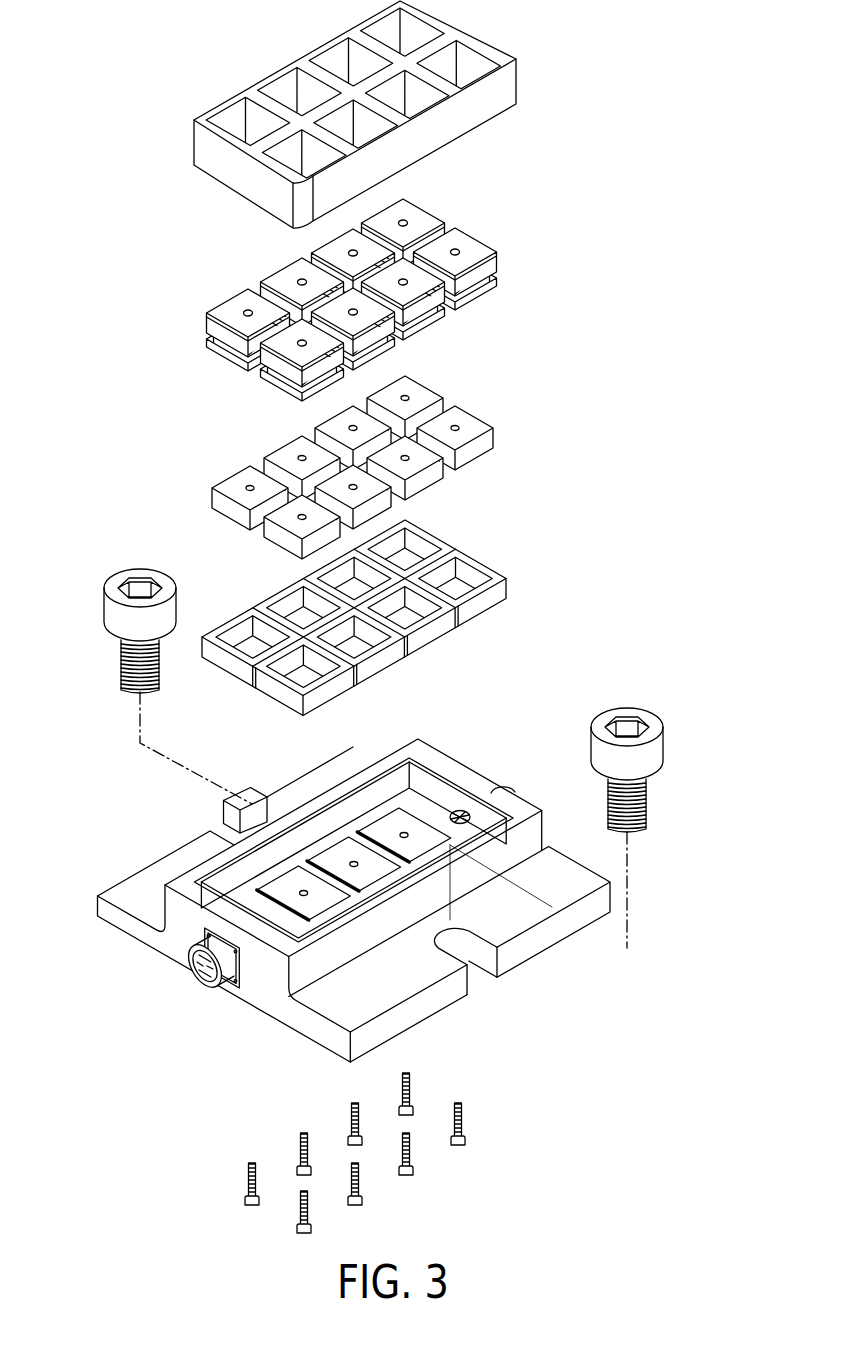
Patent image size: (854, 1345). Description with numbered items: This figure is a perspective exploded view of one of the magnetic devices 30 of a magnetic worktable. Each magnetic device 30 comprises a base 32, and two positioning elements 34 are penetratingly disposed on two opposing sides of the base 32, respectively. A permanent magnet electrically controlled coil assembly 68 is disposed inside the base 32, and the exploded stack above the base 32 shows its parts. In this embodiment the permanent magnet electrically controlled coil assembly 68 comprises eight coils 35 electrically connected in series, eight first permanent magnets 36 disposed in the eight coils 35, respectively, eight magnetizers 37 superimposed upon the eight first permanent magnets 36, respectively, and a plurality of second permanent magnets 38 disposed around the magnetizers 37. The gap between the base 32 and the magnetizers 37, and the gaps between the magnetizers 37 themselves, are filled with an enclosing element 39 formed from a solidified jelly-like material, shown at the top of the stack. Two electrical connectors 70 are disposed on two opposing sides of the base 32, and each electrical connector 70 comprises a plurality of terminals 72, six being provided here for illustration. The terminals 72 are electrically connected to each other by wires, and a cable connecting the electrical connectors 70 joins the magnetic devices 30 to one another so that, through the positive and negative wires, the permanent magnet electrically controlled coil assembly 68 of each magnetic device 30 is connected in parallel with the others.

The magnetic device 30 is at (108, 93).
The base 32 is at (278, 1017).
The positioning element 34 is at (105, 605).
The coil 35 is at (483, 558).
The first permanent magnet 36 is at (477, 417).
The magnetizer 37 is at (227, 300).
The second permanent magnet 38 is at (490, 292).
The enclosing element 39 is at (515, 88).
The permanent magnet electrically controlled coil assembly 68 is at (590, 247).
The electrical connector 70 is at (503, 778).
The terminal 72 is at (200, 975).